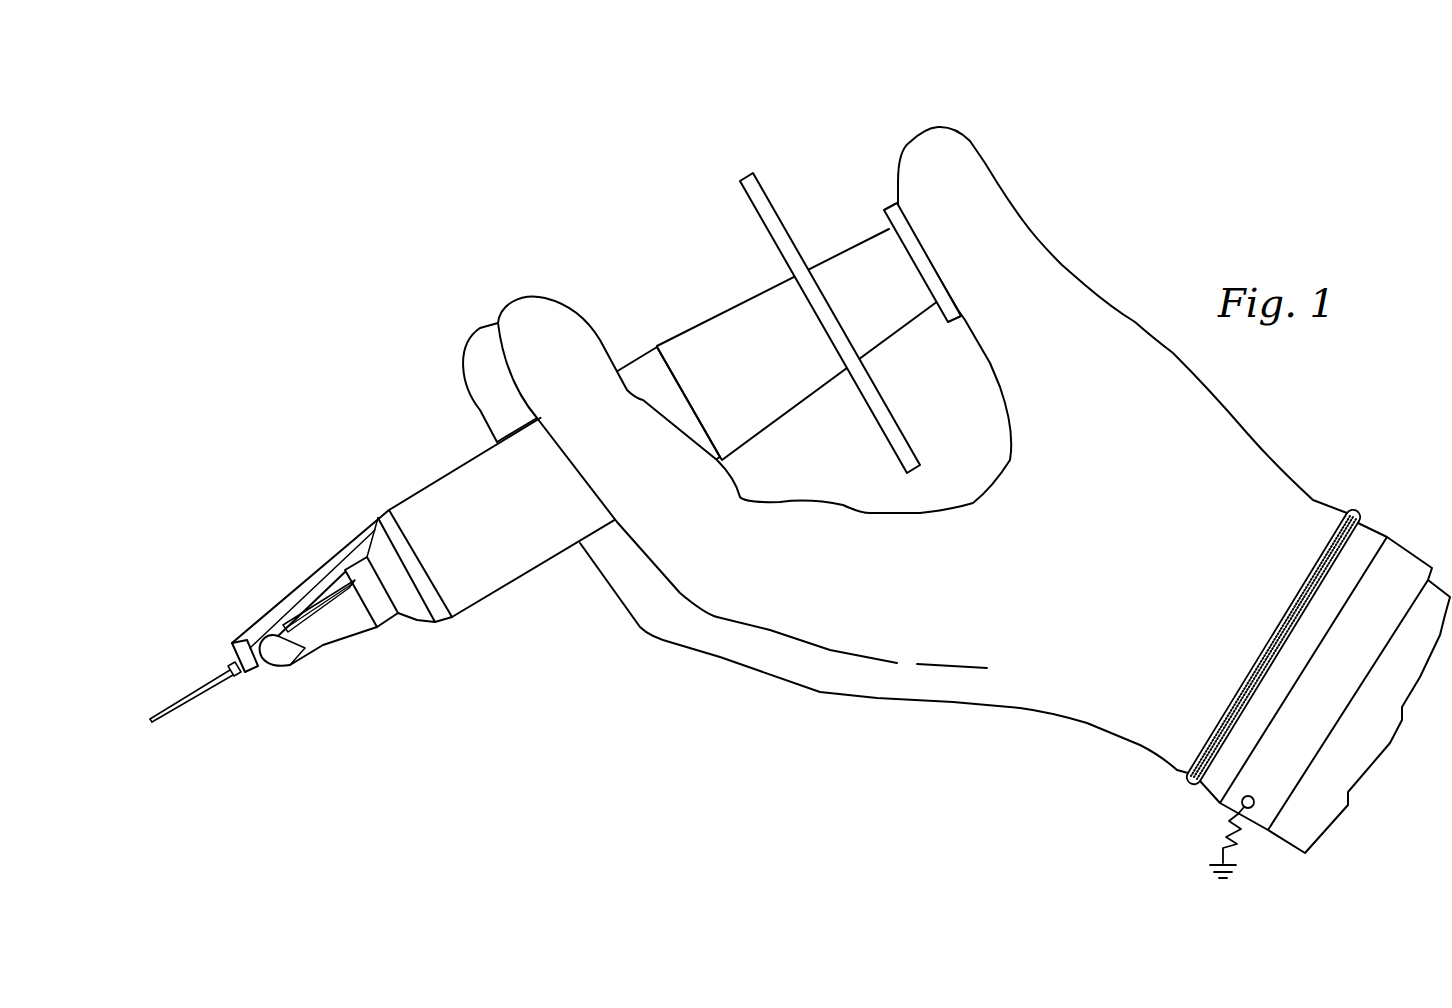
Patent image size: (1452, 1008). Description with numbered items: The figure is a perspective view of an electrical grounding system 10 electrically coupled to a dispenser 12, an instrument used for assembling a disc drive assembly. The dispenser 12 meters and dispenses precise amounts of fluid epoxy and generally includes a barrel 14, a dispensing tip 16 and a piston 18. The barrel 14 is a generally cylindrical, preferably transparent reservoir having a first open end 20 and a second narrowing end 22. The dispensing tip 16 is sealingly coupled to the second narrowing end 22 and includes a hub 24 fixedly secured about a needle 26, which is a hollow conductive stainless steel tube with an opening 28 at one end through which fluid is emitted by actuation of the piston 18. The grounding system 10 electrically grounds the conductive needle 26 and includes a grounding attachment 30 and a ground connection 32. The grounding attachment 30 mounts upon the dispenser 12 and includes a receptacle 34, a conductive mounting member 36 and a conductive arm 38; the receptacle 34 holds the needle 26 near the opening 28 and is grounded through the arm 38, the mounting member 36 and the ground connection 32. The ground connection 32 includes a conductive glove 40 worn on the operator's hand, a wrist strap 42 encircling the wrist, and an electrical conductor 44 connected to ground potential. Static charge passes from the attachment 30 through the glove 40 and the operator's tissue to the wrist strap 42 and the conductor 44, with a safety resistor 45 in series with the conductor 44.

The electrical grounding system 10 is at (364, 409).
The dispenser 12 is at (761, 272).
The barrel 14 is at (740, 305).
The dispensing tip 16 is at (277, 653).
The piston 18 is at (887, 242).
The first open end 20 is at (818, 272).
The second narrowing end 22 is at (417, 622).
The hub 24 is at (348, 633).
The needle 26 is at (160, 723).
The opening 28 is at (145, 723).
The grounding attachment 30 is at (637, 345).
The ground connection 32 is at (1037, 648).
The receptacle 34 is at (231, 665).
The conductive mounting member 36 is at (470, 457).
The conductive arm 38 is at (360, 518).
The conductive glove 40 is at (1247, 440).
The wrist strap 42 is at (1413, 562).
The electrical conductor 44 is at (1220, 856).
The resistor 45 is at (1237, 828).